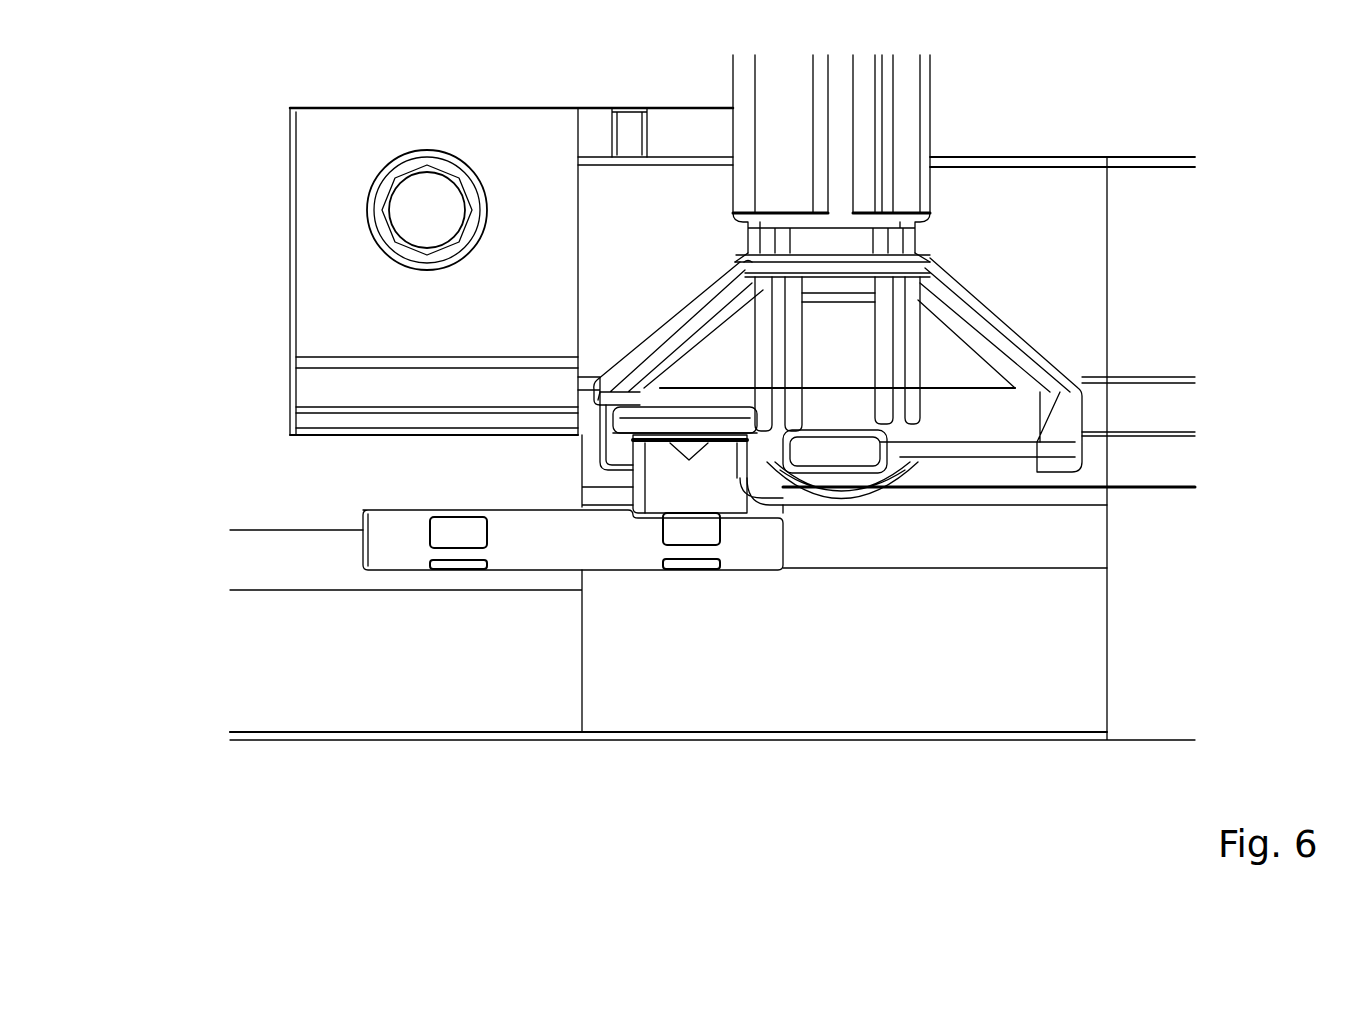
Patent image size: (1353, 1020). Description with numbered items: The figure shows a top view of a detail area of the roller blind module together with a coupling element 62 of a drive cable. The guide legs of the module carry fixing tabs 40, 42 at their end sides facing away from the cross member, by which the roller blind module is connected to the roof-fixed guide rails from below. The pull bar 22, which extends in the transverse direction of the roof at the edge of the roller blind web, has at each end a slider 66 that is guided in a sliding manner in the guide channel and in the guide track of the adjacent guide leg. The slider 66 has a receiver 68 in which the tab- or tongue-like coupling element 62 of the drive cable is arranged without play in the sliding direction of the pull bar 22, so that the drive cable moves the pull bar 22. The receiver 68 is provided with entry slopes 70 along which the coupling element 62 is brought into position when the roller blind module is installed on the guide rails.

The pull bar 22 is at (915, 93).
The fixing tab 40 is at (375, 717).
The fixing tab 42 is at (310, 188).
The coupling element 62 is at (703, 493).
The slider 66 is at (1015, 340).
The receiver 68 is at (620, 442).
The entry slope 70 is at (625, 453).